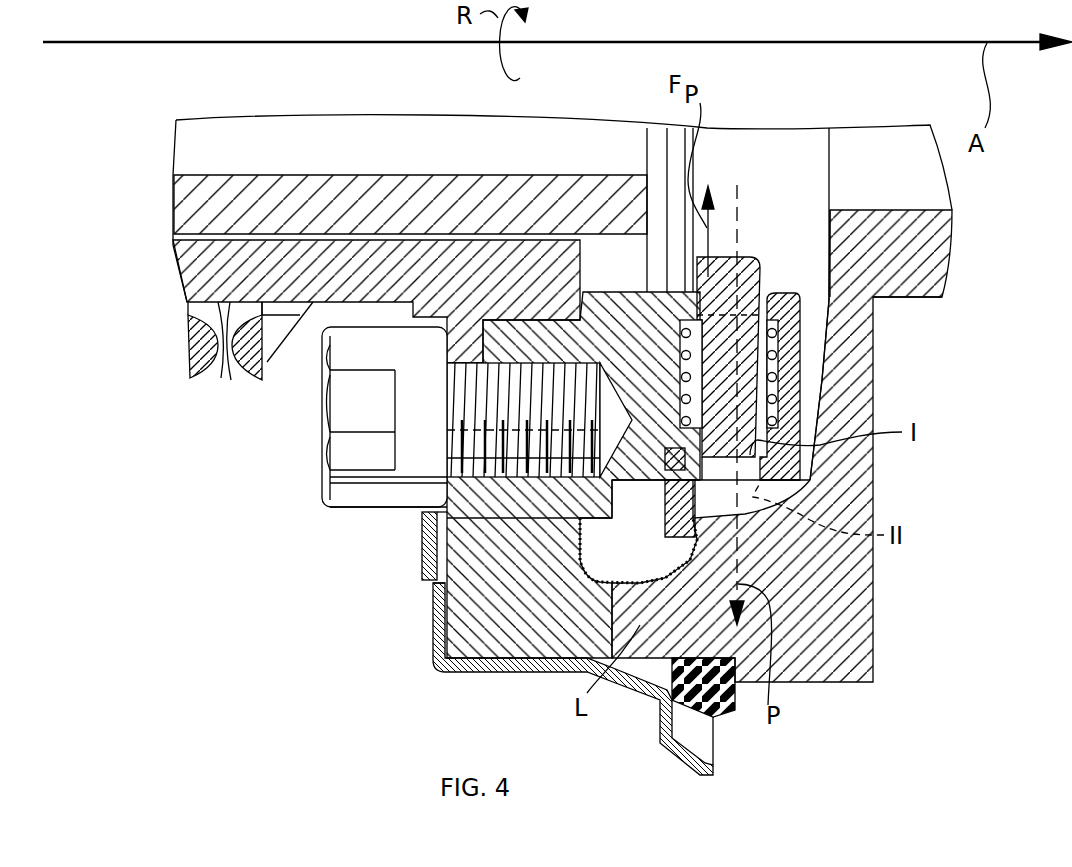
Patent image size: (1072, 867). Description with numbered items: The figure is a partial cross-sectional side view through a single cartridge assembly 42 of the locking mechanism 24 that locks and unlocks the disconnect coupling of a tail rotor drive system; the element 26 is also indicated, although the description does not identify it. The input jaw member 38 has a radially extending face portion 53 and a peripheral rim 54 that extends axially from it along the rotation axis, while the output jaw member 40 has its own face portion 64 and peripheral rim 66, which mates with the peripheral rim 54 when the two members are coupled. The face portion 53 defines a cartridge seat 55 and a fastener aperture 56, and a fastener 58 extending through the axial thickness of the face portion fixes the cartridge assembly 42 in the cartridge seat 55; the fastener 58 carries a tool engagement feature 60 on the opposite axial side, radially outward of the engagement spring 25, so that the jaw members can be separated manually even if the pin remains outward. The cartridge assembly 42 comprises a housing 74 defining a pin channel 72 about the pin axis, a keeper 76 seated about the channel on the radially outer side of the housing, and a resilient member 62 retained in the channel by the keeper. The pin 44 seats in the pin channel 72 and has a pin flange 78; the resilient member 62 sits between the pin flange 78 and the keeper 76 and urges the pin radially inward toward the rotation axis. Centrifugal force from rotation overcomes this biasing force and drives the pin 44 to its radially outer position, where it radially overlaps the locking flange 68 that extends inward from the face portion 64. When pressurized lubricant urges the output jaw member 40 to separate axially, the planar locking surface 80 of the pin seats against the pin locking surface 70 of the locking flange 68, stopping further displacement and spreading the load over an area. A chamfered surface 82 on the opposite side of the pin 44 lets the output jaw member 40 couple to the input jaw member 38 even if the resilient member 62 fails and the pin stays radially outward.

The locking mechanism 24 is at (758, 192).
The engagement spring 25 is at (250, 362).
The clamping device 26 is at (218, 622).
The input jaw member 38 is at (483, 657).
The output jaw member 40 is at (827, 652).
The cartridge assembly 42 is at (519, 278).
The pin 44 is at (755, 277).
The face portion 53 is at (437, 590).
The peripheral rim 54 is at (578, 625).
The cartridge seat 55 is at (522, 516).
The fastener aperture 56 is at (467, 480).
The fastener 58 is at (347, 500).
The tool engagement feature 60 is at (288, 414).
The resilient member 62 is at (773, 333).
The face portion 64 is at (868, 353).
The peripheral rim 66 is at (652, 630).
The locking flange 68 is at (677, 503).
The pin locking surface 70 is at (693, 535).
The pin channel 72 is at (770, 385).
The housing 74 is at (637, 307).
The keeper 76 is at (665, 454).
The pin flange 78 is at (780, 348).
The planar locking surface 80 is at (682, 400).
The chamfered surface 82 is at (786, 468).